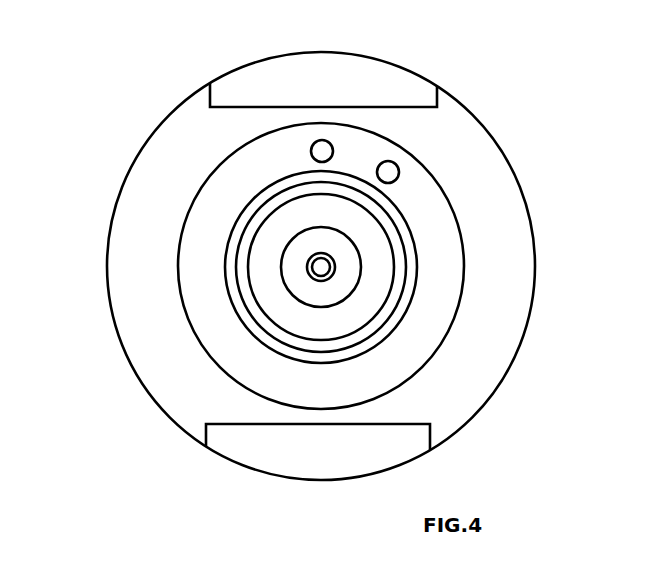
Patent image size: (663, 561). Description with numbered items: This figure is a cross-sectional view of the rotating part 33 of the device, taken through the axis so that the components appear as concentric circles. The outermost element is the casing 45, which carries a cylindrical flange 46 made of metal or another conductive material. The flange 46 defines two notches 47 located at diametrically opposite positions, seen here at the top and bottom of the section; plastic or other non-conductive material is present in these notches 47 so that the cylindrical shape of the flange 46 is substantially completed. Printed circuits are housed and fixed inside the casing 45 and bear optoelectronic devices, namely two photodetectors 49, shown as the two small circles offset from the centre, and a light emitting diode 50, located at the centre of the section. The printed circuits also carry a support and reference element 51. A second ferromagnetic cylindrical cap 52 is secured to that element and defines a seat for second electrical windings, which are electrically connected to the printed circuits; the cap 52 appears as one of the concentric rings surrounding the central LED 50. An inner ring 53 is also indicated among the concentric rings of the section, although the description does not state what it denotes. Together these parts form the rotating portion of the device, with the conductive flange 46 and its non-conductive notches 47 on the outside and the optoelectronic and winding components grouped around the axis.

The rotating part 33 is at (125, 163).
The casing 45 is at (158, 223).
The cylindrical flange 46 is at (108, 307).
The notches 47 is at (215, 92).
The photodetectors 49 is at (322, 151).
The light emitting diode 50 is at (321, 267).
The support and reference element 51 is at (413, 261).
The second ferromagnetic cylindrical cap 52 is at (403, 282).
The inner annular ring 53 is at (372, 303).